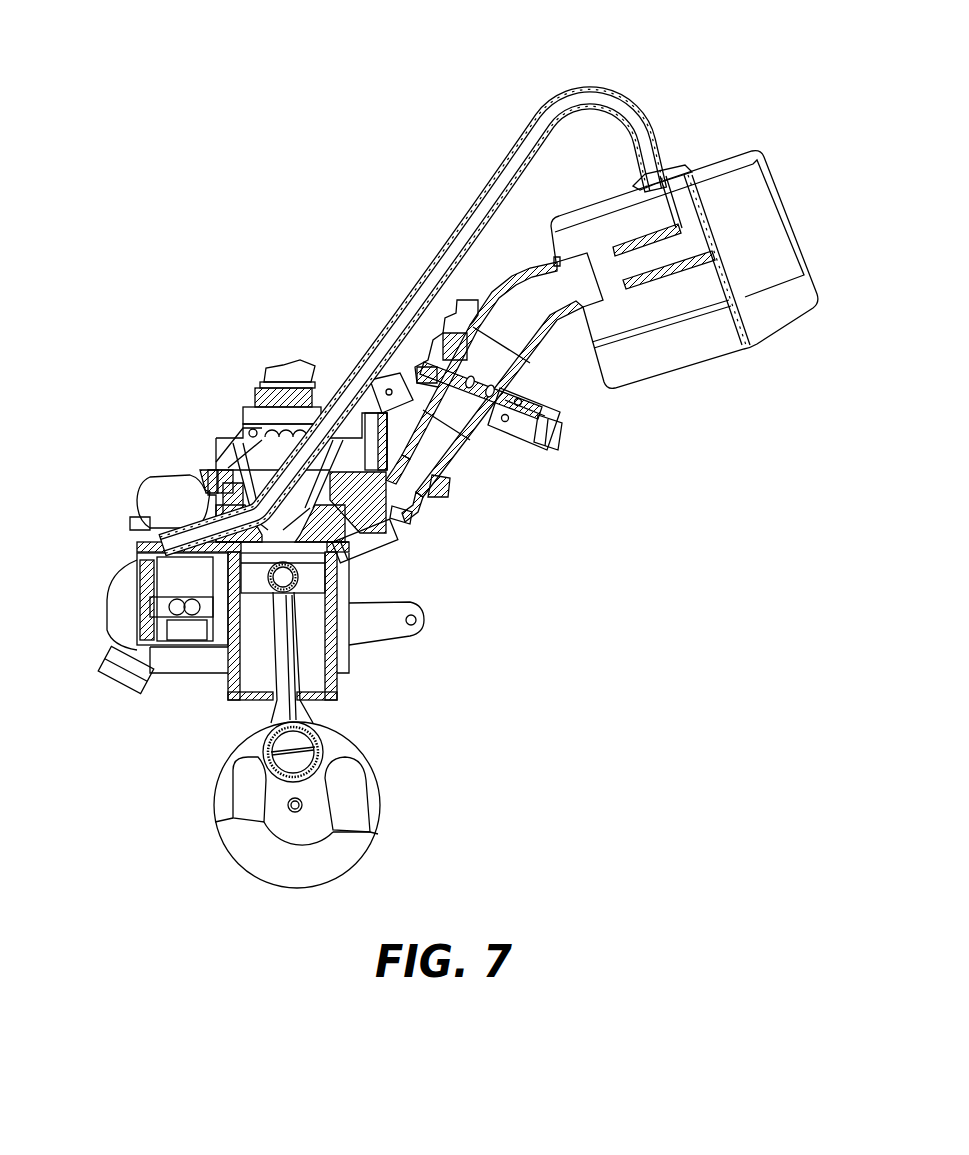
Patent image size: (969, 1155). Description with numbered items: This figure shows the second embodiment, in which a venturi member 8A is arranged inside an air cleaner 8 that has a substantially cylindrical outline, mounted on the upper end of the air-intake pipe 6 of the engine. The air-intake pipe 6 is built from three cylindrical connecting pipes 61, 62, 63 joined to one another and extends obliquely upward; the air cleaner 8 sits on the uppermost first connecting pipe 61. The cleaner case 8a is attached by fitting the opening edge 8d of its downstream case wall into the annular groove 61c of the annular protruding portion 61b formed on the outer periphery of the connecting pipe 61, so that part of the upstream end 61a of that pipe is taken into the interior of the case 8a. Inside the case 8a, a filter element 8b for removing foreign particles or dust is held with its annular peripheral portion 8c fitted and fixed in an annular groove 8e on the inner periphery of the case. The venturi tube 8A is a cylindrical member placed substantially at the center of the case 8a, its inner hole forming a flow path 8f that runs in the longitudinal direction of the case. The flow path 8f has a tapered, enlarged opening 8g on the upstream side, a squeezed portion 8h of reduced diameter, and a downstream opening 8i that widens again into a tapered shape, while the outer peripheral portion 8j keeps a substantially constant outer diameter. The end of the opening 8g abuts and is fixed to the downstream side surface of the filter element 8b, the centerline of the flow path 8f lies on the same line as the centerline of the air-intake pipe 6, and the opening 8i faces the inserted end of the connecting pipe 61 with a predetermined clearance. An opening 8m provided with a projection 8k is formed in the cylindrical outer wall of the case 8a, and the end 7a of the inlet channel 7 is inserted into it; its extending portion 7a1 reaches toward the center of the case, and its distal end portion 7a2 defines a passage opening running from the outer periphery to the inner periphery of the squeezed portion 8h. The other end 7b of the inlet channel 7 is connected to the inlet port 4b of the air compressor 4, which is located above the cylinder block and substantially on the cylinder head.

The compressor 4 is at (130, 620).
The inlet port 4b is at (150, 545).
The air-intake pipe 6 is at (498, 452).
The first connecting pipe 61 is at (548, 344).
The upstream end 61a is at (522, 270).
The annular protruding portion 61b is at (556, 260).
The annular groove 61c is at (563, 262).
The second connecting pipe 62 is at (506, 445).
The third connecting pipe 63 is at (442, 505).
The inlet channel 7 is at (487, 190).
The end of inlet channel 7a is at (660, 172).
The extending portion 7a1 is at (660, 196).
The distal end portion 7a2 is at (686, 207).
The other end of inlet channel 7b is at (250, 517).
The air cleaner 8 is at (681, 386).
The venturi member 8A is at (679, 275).
The cleaner case 8a is at (720, 358).
The filter element 8b is at (742, 278).
The annular peripheral portion 8c is at (698, 167).
The opening edge 8d is at (543, 233).
The annular groove 8e is at (672, 174).
The flow path 8f is at (663, 277).
The opening on upstream side 8g is at (700, 243).
The squeezed portion 8h is at (700, 231).
The opening on downstream side 8i is at (622, 278).
The outer peripheral portion 8j is at (625, 240).
The projection 8k is at (642, 158).
The opening 8m is at (640, 174).